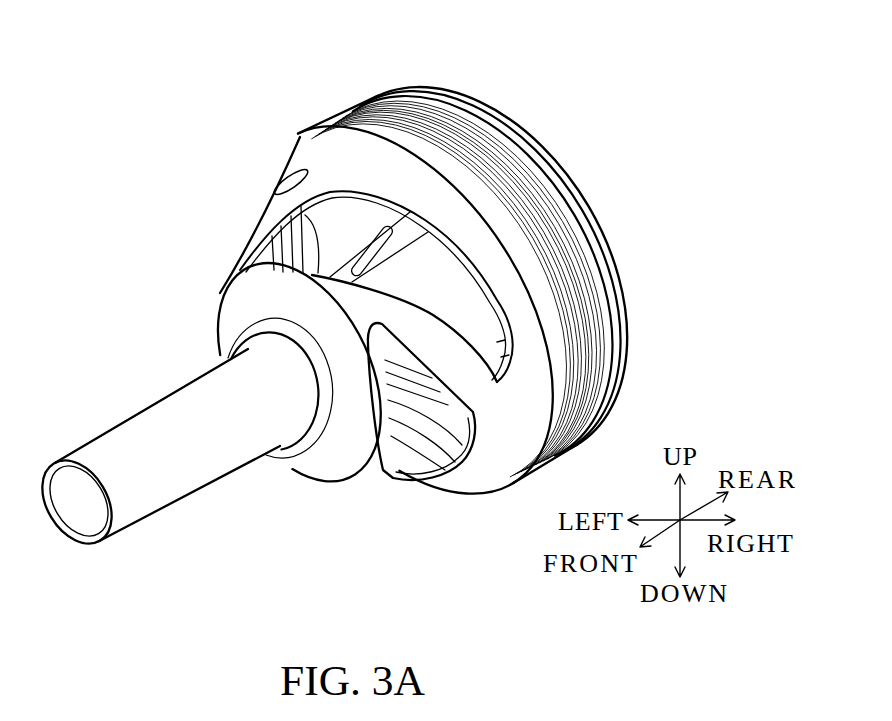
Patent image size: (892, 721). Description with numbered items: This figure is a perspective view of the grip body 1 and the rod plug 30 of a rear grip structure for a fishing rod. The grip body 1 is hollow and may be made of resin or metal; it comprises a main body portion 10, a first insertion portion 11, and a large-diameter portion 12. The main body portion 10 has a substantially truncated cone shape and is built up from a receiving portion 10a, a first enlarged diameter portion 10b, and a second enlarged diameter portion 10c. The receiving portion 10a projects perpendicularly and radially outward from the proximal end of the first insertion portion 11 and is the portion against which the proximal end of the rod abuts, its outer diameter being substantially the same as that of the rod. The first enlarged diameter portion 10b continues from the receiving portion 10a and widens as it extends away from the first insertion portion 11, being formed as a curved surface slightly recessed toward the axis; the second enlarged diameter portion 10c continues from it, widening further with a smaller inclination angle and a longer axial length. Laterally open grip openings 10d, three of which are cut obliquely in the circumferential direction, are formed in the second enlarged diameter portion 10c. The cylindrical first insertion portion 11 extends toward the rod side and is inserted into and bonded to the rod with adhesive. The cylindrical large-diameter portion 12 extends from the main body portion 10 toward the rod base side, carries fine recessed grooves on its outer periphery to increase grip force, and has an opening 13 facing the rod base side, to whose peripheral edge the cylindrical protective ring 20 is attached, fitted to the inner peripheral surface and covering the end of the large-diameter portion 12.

The grip body 1 is at (133, 156).
The main body portion 10 is at (393, 247).
The receiving portion 10a is at (246, 344).
The first enlarged diameter portion 10b is at (226, 318).
The second enlarged diameter portion 10c is at (323, 162).
The grip openings 10d is at (470, 267).
The first insertion portion 11 is at (118, 437).
The large-diameter portion 12 is at (401, 110).
The opening 13 is at (476, 103).
The protective ring 20 is at (550, 131).
The rod plug 30 is at (414, 506).